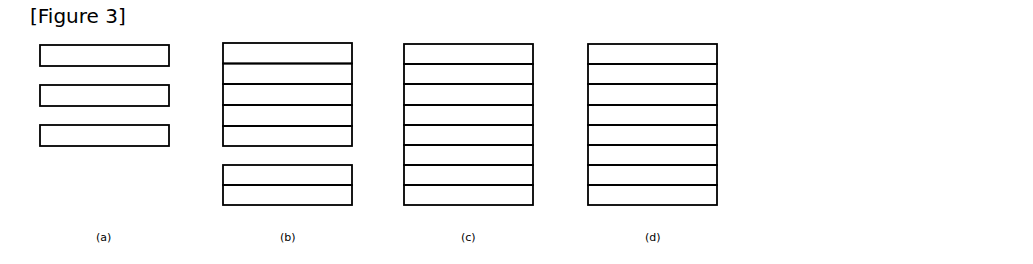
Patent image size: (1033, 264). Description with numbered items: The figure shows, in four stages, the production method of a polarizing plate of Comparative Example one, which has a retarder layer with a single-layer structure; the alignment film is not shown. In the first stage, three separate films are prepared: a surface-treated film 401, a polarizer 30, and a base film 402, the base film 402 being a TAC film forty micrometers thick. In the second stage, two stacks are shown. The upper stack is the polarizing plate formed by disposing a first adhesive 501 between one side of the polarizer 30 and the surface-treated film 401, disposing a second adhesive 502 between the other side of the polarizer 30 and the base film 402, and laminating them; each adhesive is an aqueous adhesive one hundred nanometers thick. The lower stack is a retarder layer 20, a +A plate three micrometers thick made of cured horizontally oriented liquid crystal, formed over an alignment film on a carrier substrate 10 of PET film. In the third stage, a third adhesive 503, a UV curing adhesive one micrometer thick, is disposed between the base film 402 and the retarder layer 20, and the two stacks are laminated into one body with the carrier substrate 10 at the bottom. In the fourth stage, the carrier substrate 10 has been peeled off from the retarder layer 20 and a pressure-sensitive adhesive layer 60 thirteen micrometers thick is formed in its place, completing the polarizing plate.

The surface-treated film 401 is at (169, 53).
The base film 402 is at (169, 133).
The polarizer 30 is at (169, 93).
The first adhesive 501 is at (352, 72).
The second adhesive 502 is at (352, 113).
The third adhesive 503 is at (533, 153).
The retarder layer 20 is at (352, 173).
The carrier substrate 10 is at (352, 193).
The pressure-sensitive adhesive layer 60 is at (717, 193).